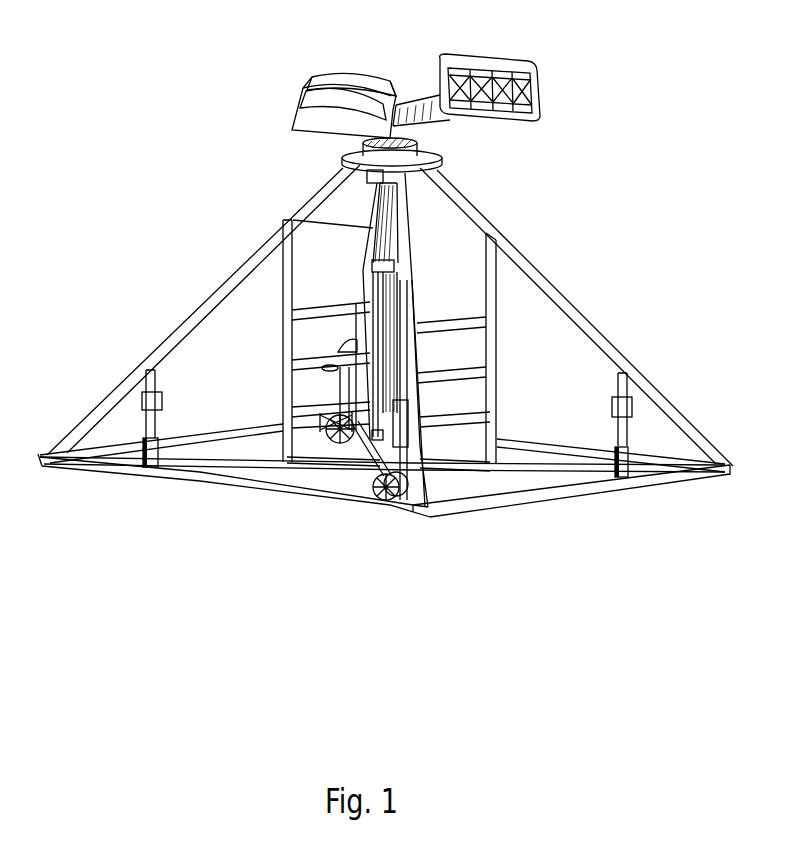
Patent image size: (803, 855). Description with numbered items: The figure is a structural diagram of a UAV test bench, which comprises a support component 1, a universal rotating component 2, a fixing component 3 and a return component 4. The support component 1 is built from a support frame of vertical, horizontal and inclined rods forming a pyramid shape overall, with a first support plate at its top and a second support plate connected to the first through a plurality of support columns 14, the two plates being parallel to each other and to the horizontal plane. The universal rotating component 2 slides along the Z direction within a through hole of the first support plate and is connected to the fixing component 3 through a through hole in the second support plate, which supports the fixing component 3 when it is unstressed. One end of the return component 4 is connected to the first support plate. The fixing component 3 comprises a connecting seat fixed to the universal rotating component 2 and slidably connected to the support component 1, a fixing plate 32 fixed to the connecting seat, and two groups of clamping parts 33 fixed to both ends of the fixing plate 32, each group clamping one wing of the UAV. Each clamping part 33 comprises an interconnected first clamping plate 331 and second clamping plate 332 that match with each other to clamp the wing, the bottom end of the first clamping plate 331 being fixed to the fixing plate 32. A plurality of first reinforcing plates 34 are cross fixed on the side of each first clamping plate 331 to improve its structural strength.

The support component 1 is at (527, 260).
The universal rotating component 2 is at (440, 152).
The fixing component 3 is at (401, 88).
The return component 4 is at (370, 227).
The support columns 14 is at (353, 150).
The fixing plate 32 is at (458, 124).
The clamping part 33 is at (293, 76).
The first clamping plate 331 is at (310, 112).
The second clamping plate 332 is at (313, 77).
The first reinforcing plates 34 is at (535, 103).